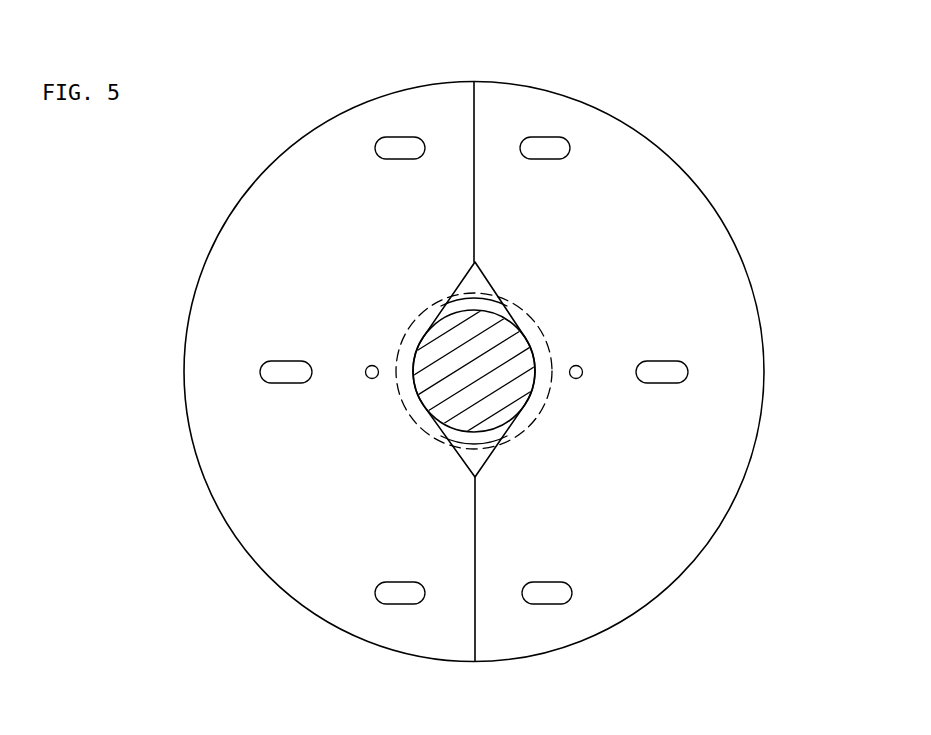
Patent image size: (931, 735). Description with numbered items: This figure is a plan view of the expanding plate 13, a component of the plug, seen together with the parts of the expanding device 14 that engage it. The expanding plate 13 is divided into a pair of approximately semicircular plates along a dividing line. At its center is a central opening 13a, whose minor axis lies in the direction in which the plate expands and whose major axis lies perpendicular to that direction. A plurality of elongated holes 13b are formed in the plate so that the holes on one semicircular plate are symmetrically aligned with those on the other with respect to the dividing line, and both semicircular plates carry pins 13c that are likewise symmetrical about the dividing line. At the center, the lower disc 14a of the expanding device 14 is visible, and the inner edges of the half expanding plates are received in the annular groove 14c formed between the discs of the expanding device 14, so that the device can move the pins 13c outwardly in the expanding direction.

The expanding plate 13 is at (634, 108).
The central opening 13a is at (462, 283).
The elongated holes 13b is at (278, 371).
The pins 13c is at (366, 378).
The lower disc 14a is at (477, 306).
The annular groove 14c is at (474, 371).
The expanding device 14 is at (490, 433).